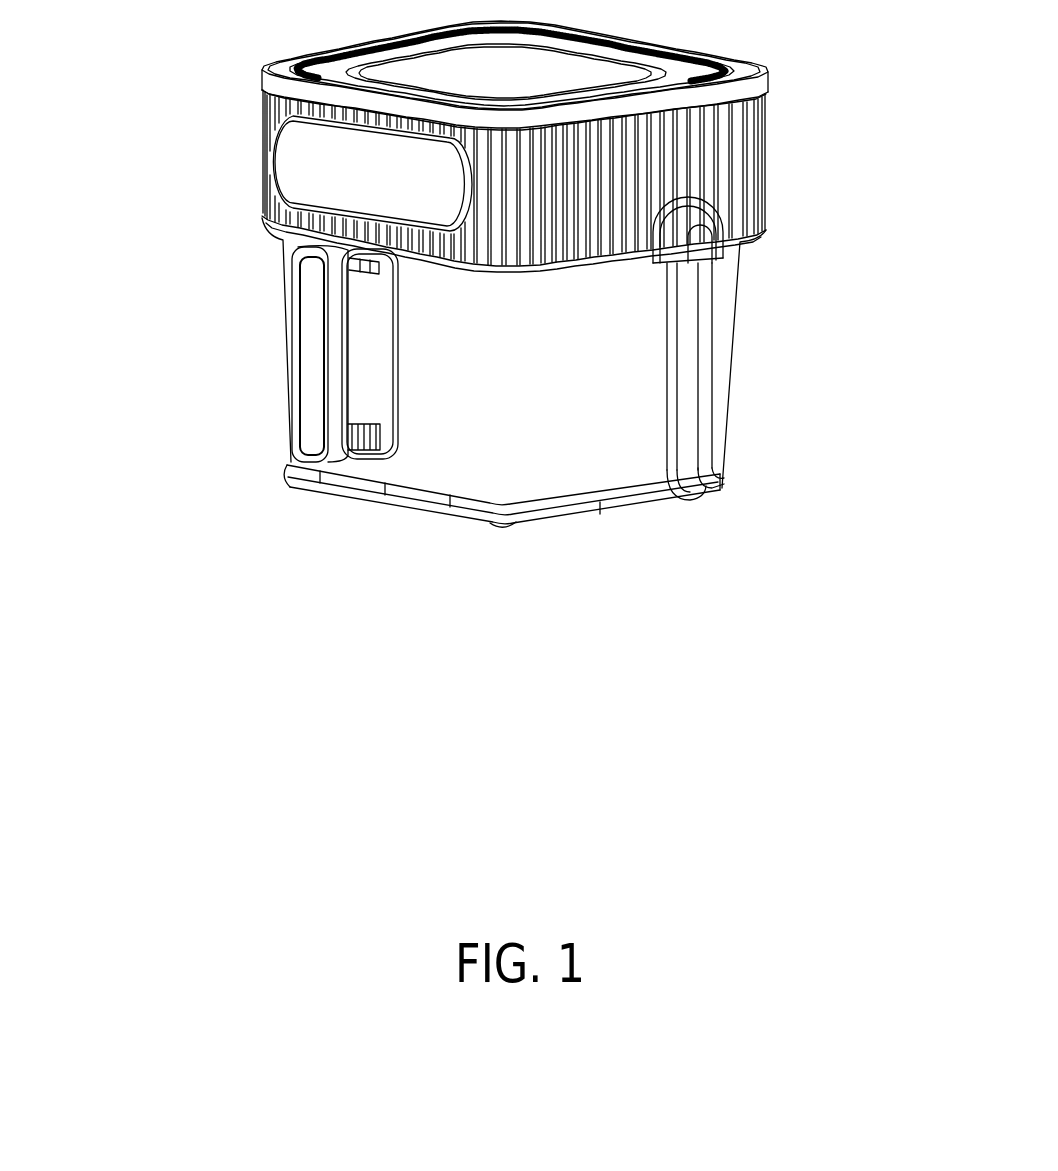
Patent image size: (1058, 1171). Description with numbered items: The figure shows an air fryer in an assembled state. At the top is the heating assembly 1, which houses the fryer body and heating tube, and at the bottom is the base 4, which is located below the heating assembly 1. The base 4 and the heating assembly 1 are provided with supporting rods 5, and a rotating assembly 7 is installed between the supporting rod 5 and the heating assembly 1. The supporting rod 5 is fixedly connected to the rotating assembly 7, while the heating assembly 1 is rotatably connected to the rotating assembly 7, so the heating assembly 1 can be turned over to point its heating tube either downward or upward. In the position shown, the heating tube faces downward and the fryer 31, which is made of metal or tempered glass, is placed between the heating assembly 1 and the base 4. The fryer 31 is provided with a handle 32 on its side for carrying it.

The heating assembly 1 is at (767, 142).
The fryer 31 is at (415, 298).
The handle 32 is at (322, 353).
The rotating assembly 7 is at (770, 225).
The supporting rod 5 is at (722, 400).
The base 4 is at (722, 487).